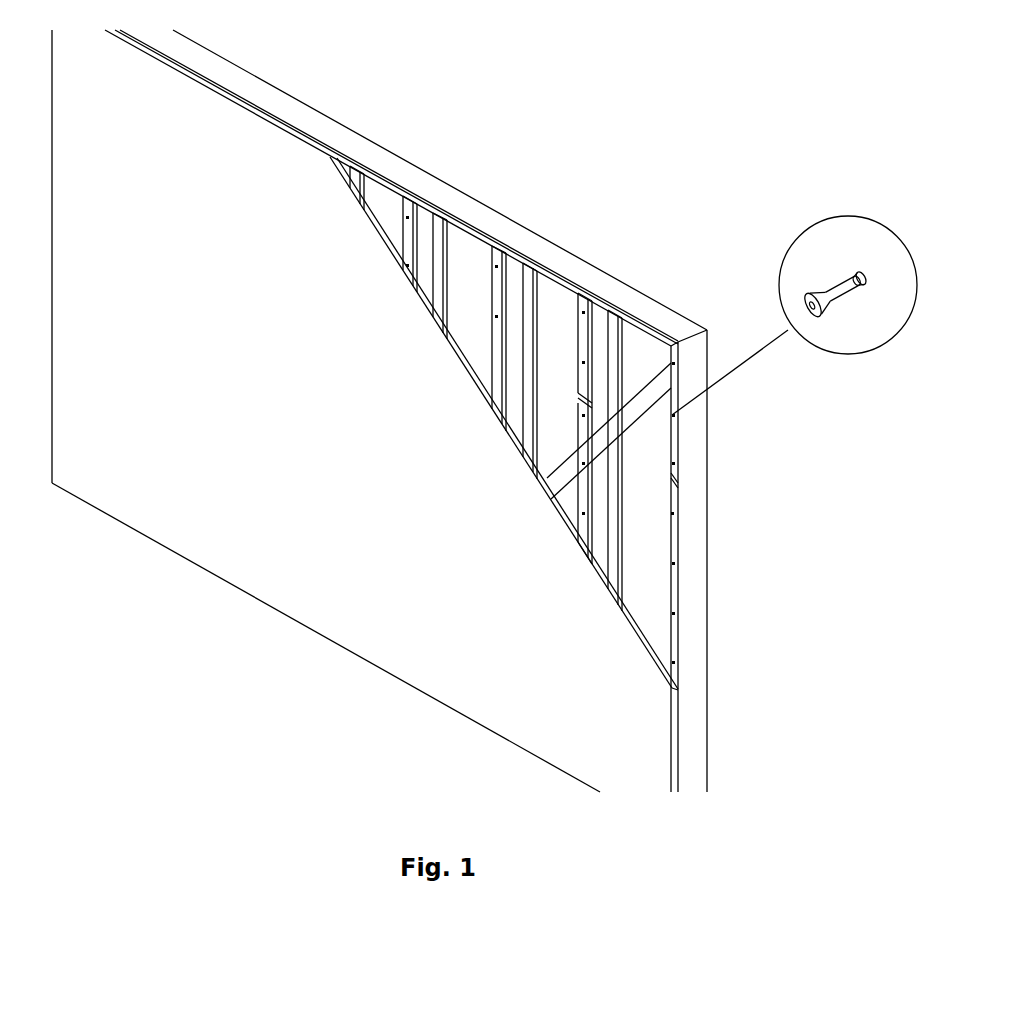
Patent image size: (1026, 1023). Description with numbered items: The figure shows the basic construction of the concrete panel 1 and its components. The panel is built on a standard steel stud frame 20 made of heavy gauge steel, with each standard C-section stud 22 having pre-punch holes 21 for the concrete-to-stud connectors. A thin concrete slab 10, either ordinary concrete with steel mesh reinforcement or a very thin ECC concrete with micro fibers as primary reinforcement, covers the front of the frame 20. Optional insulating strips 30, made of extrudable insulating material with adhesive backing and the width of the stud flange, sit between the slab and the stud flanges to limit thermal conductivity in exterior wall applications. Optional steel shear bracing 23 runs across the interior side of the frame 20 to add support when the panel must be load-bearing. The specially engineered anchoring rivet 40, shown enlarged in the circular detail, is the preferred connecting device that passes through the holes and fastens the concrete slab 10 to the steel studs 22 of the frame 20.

The concrete panel 1 is at (200, 636).
The concrete slab 10 is at (218, 470).
The steel stud frame 20 is at (473, 197).
The pre-punch holes 21 is at (590, 350).
The C-section stud 22 is at (510, 305).
The steel shear bracing 23 is at (562, 480).
The insulating strip 30 is at (590, 430).
The anchoring rivet 40 is at (672, 415).